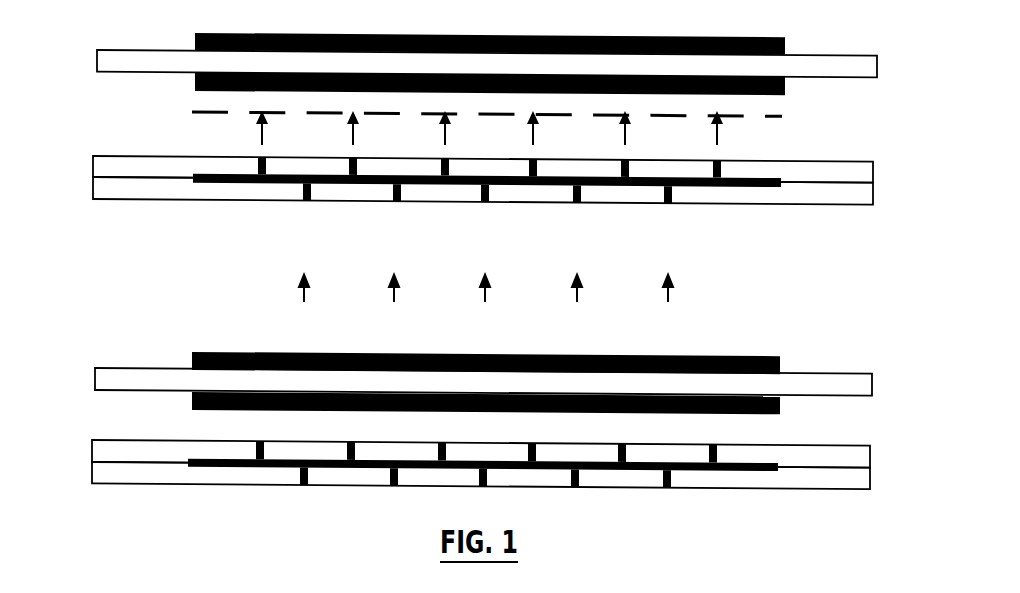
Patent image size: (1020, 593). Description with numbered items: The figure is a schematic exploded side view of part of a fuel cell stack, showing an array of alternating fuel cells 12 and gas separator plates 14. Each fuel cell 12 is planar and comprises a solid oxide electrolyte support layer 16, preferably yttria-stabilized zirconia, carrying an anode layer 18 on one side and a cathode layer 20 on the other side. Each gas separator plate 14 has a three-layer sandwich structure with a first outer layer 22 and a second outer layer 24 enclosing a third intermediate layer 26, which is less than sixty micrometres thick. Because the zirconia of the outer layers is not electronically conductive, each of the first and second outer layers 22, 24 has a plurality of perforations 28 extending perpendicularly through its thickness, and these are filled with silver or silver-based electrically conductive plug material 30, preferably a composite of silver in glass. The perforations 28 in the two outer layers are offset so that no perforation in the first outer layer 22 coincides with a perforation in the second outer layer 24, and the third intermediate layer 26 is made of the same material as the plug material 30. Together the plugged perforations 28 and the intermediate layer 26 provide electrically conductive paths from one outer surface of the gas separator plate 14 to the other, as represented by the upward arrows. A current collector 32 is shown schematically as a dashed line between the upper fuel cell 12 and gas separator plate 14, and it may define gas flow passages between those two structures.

The fuel cell 12 is at (499, 215).
The gas separator plate 14 is at (499, 320).
The solid oxide electrolyte support layer 16 is at (97, 60).
The anode layer 18 is at (197, 41).
The cathode layer 20 is at (197, 79).
The first outer layer 22 is at (93, 164).
The second outer layer 24 is at (93, 199).
The third intermediate layer 26 is at (193, 176).
The perforations 28 is at (471, 297).
The plug material 30 is at (504, 176).
The current collector 32 is at (192, 111).